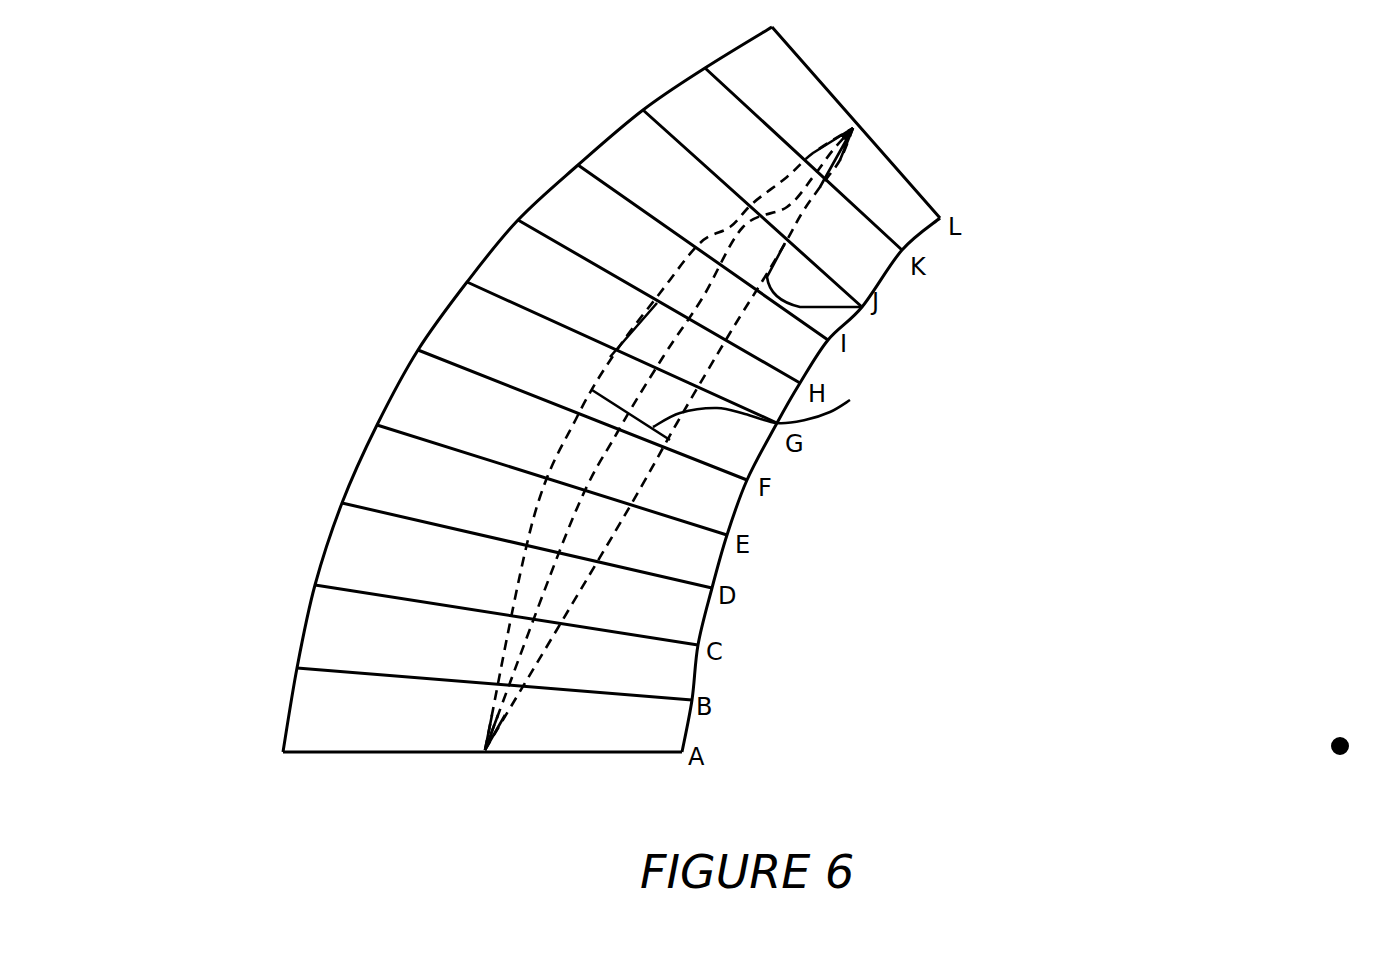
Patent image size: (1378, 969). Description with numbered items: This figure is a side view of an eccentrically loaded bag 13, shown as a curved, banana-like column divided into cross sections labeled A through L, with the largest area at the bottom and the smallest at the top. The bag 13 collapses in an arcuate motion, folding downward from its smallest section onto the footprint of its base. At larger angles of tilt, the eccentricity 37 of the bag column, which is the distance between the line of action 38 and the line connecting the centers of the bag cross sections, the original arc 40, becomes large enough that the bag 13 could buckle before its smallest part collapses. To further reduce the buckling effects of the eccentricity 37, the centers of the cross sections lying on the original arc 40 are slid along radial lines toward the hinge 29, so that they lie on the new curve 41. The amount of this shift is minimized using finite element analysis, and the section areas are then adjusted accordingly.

The bag 13 is at (910, 192).
The hinge 29 is at (1340, 746).
The eccentricity 37 is at (738, 408).
The line of action 38 is at (860, 307).
The original arc 40 is at (553, 463).
The new curve 41 is at (717, 237).